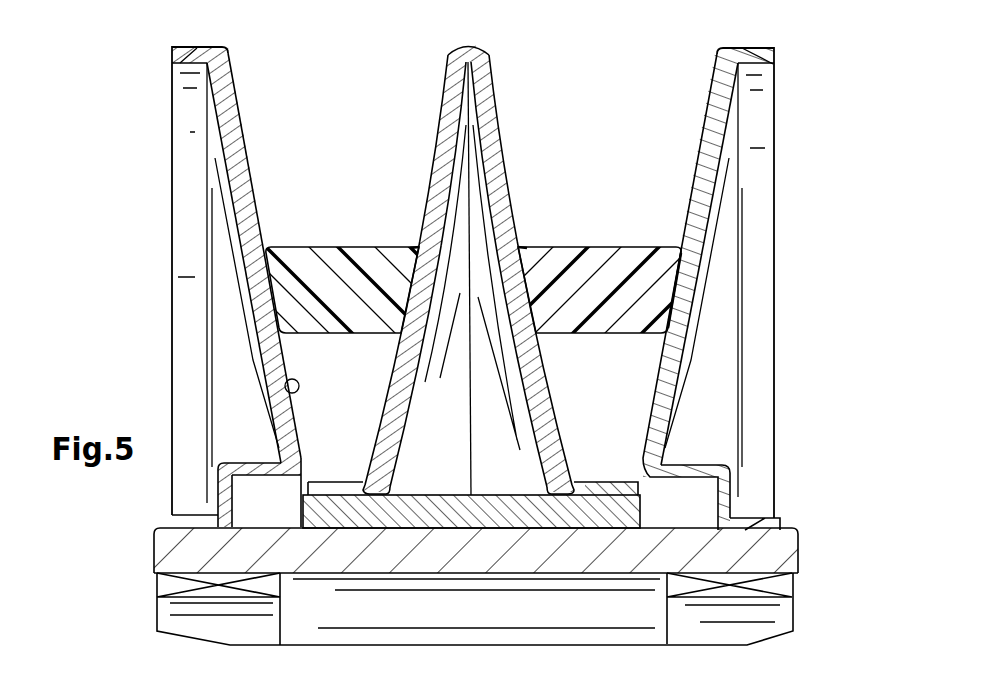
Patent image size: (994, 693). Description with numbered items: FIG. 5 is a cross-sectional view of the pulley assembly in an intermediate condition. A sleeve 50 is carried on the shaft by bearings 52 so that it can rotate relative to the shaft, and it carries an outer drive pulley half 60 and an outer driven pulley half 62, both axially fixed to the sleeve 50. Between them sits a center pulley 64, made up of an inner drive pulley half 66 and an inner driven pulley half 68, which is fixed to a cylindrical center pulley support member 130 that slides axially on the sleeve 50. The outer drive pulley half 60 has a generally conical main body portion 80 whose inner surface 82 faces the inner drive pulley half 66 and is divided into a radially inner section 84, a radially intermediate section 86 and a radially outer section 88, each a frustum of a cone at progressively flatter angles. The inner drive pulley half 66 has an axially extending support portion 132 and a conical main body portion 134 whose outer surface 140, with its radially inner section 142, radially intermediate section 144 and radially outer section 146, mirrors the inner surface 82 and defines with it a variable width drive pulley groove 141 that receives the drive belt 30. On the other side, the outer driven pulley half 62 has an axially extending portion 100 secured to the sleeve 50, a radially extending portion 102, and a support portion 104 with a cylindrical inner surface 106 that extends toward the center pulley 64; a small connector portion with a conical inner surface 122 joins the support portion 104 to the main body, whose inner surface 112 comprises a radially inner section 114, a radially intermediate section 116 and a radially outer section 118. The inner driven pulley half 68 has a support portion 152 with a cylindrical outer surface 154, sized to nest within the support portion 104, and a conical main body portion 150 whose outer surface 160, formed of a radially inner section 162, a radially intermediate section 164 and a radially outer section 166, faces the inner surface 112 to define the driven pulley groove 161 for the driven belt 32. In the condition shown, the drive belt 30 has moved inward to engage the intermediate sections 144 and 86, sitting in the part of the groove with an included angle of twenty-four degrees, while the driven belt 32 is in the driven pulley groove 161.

The drive belt 30 is at (613, 306).
The driven belt 32 is at (333, 308).
The sleeve 50 is at (188, 557).
The bearings 52 is at (180, 583).
The outer drive pulley half 60 is at (785, 173).
The outer driven pulley half 62 is at (164, 188).
The center pulley 64 is at (443, 64).
The inner drive pulley half 66 is at (568, 38).
The inner driven pulley half 68 is at (431, 88).
The main body portion 80 is at (707, 78).
The inner surface 82 is at (699, 128).
The radially inner section 84 is at (657, 383).
The radially intermediate section 86 is at (670, 270).
The radially outer section 88 is at (700, 153).
The axially extending portion 100 is at (180, 517).
The radially extending portion 102 is at (227, 493).
The support portion 104 is at (260, 467).
The inner surface 106 is at (285, 496).
The inner surface 112 is at (244, 83).
The radially inner section 114 is at (288, 392).
The radially intermediate section 116 is at (260, 278).
The radially outer section 118 is at (250, 130).
The inner surface of connector portion 122 is at (266, 497).
The center pulley support member 130 is at (516, 512).
The support portion 132 is at (608, 490).
The main body portion 134 is at (498, 60).
The outer surface 140 is at (506, 99).
The drive pulley groove 141 is at (586, 168).
The radially inner section 142 is at (560, 382).
The radially intermediate section 144 is at (560, 250).
The radially outer section 146 is at (503, 140).
The main body portion 150 is at (426, 117).
The support portion 152 is at (323, 485).
The cylindrical outer surface 154 is at (338, 482).
The outer surface 160 is at (388, 363).
The driven pulley groove 161 is at (329, 127).
The radially inner section 162 is at (388, 395).
The radially intermediate section 164 is at (417, 258).
The radially outer section 166 is at (432, 136).